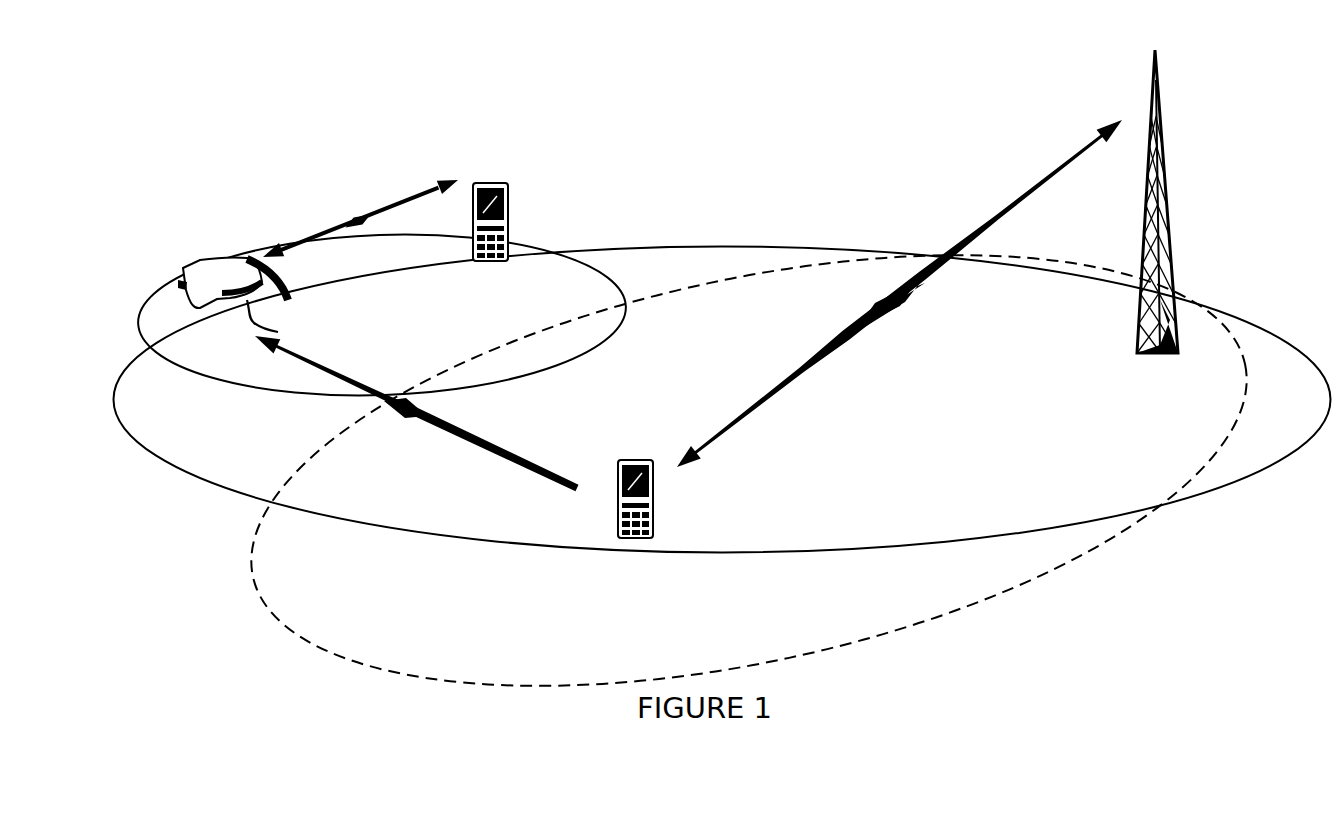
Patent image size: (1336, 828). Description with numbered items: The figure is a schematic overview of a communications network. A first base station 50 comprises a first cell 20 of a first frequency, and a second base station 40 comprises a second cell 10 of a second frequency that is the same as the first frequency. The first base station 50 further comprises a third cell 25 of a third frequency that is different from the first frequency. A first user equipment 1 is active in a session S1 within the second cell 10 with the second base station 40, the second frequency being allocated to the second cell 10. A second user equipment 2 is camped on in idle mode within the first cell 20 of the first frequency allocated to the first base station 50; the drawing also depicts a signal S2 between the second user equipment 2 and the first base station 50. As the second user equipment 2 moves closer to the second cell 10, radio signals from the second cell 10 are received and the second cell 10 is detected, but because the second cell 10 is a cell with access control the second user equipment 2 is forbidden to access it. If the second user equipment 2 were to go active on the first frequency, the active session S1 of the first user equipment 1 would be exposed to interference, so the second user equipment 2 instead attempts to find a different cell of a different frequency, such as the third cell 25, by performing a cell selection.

The first user equipment 1 is at (505, 188).
The second user equipment 2 is at (618, 495).
The second cell 10 is at (410, 308).
The first cell 20 is at (903, 421).
The third cell 25 is at (745, 602).
The second base station 40 is at (202, 263).
The first base station 50 is at (1167, 193).
The session S1 is at (366, 216).
The terrestrial signal S2 is at (866, 300).